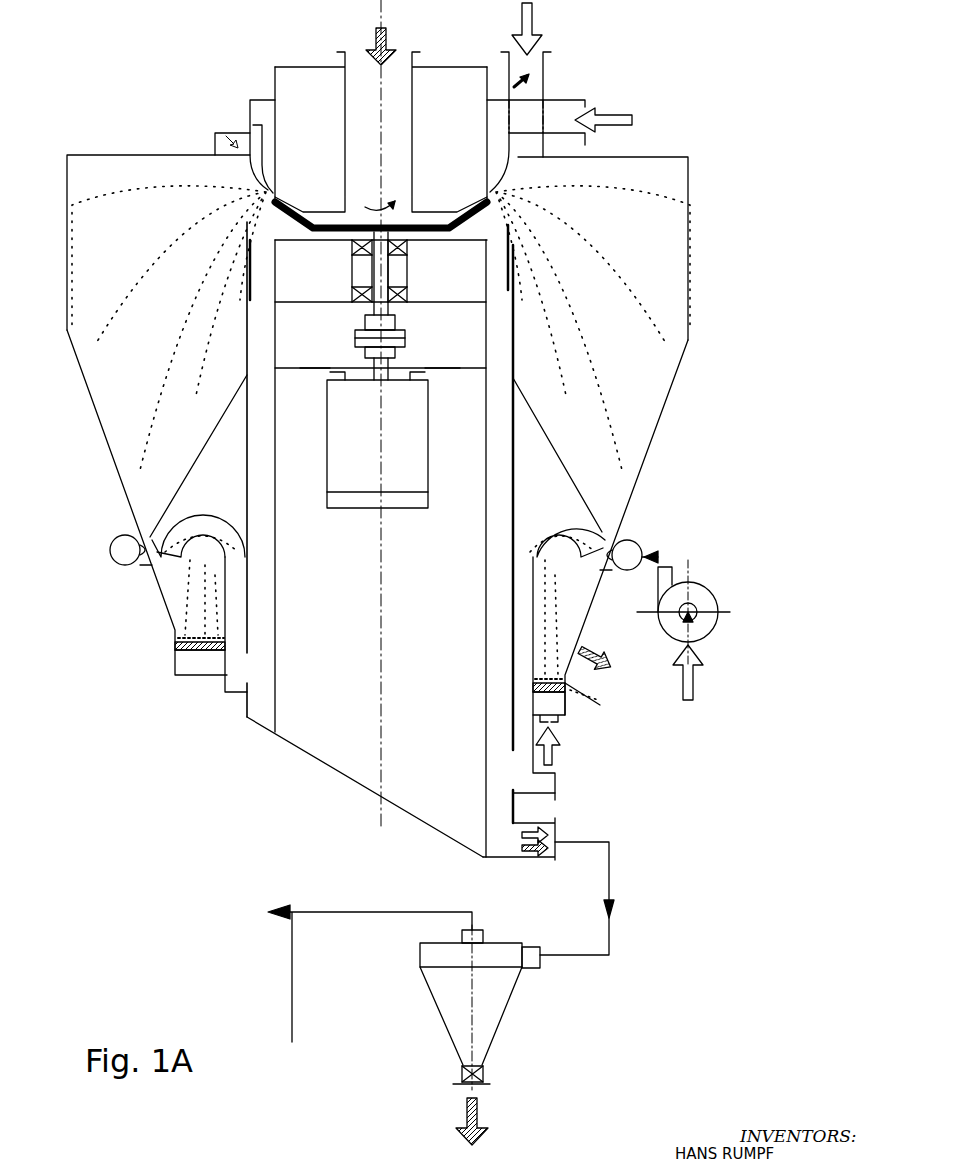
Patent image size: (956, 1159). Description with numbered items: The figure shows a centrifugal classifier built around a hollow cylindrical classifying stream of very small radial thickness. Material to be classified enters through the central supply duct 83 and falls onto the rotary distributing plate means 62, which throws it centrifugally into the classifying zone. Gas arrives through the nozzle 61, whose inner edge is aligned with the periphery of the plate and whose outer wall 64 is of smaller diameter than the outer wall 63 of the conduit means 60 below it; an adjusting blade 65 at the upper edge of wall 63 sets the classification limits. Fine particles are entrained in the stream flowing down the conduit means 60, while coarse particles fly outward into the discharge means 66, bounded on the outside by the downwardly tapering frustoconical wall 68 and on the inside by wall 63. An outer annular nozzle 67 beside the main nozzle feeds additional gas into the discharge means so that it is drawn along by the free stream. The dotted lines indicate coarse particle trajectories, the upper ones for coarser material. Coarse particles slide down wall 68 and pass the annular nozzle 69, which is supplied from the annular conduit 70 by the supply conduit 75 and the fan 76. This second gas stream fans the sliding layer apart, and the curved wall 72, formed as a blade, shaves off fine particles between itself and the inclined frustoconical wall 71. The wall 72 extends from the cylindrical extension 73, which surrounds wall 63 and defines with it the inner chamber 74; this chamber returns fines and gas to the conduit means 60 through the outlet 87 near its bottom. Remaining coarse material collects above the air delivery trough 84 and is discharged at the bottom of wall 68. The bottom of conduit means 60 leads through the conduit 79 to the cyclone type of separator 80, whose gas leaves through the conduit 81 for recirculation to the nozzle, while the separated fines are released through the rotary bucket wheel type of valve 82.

The conduit means 60 is at (497, 548).
The nozzle 61 is at (262, 125).
The rotary distributing plate means 62 is at (487, 211).
The outer wall 63 is at (513, 323).
The outer wall 64 is at (266, 189).
The adjusting blade 65 is at (513, 237).
The discharge means 66 is at (688, 178).
The outer annular nozzle 67 is at (240, 145).
The exterior frustoconical wall 68 is at (657, 425).
The annular nozzle 69 is at (140, 537).
The annular conduit 70 is at (613, 540).
The frustoconical wall 71 is at (568, 468).
The curved wall 72 is at (183, 523).
The cylindrical extension 73 is at (225, 597).
The inner chamber 74 is at (520, 633).
The supply conduit 75 is at (658, 557).
The fan 76 is at (705, 597).
The conduit 79 is at (609, 883).
The cyclone type of separator 80 is at (510, 1002).
The conduit 81 is at (370, 990).
The rotary bucket wheel type of valve 82 is at (485, 1078).
The central supply duct 83 is at (360, 100).
The air delivery trough 84 is at (193, 660).
The outlet 87 is at (242, 665).